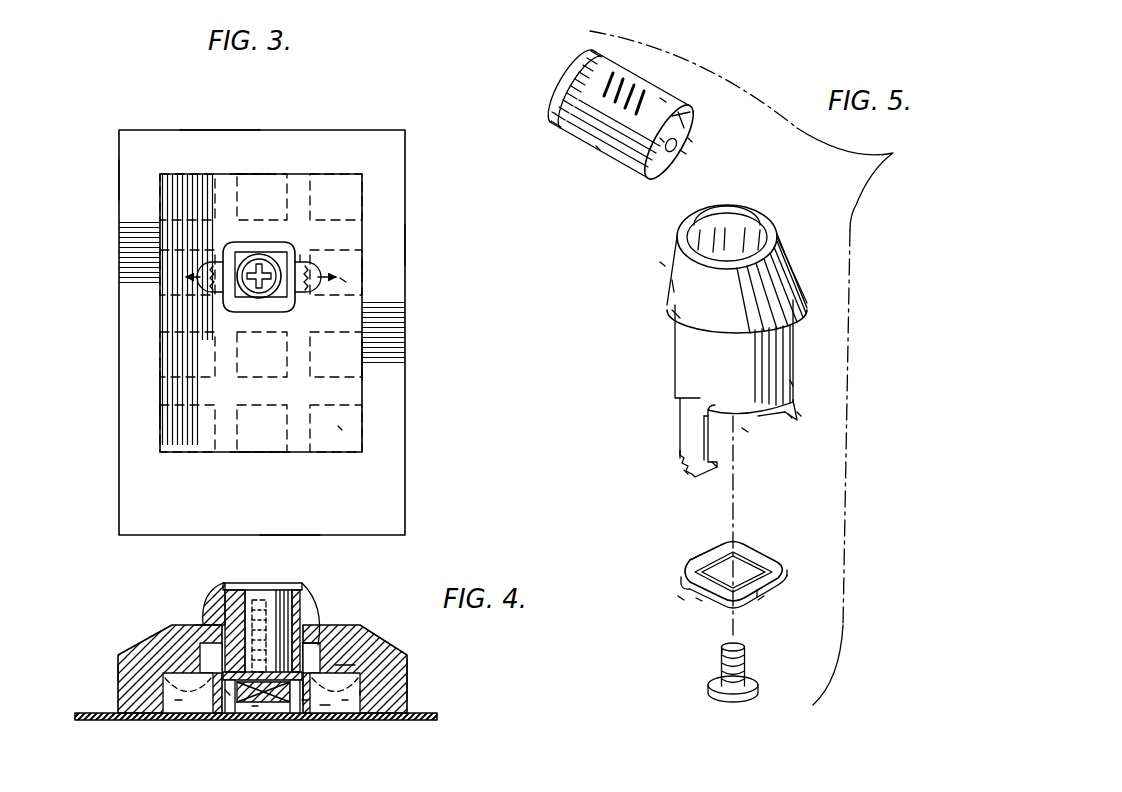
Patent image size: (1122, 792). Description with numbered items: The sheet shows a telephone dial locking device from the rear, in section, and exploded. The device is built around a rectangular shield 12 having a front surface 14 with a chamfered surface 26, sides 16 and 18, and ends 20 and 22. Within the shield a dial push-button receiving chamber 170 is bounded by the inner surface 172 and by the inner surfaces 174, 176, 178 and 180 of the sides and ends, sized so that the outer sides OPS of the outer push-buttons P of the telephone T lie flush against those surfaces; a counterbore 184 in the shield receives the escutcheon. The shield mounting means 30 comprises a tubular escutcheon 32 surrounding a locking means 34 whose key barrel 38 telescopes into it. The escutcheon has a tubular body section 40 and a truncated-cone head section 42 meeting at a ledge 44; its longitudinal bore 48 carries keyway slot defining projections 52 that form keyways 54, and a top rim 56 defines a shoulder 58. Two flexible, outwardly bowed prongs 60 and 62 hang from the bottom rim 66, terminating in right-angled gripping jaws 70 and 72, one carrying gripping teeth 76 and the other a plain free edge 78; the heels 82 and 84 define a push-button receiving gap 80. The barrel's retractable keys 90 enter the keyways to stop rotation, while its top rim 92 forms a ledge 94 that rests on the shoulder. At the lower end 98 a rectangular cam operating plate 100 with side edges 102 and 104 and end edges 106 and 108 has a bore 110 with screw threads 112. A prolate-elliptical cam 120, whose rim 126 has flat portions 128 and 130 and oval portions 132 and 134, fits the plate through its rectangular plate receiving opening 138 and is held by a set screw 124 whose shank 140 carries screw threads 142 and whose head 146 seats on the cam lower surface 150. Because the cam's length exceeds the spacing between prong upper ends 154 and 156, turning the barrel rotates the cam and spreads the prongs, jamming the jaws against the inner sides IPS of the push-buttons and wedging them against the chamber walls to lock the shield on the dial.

In FIG. 3, the shield 12 is at (322, 128).
In FIG. 4, the shield 12 is at (142, 636).
In FIG. 4, the front surface 14 is at (205, 620).
In FIG. 3, the side 16 is at (119, 177).
In FIG. 4, the side 16 is at (407, 664).
In FIG. 3, the side 18 is at (405, 243).
In FIG. 4, the side 18 is at (120, 672).
In FIG. 3, the end 20 is at (222, 130).
In FIG. 3, the end 22 is at (288, 535).
In FIG. 5, the end 22 is at (780, 0).
In FIG. 4, the chamfered surface 26 is at (157, 624).
In FIG. 5, the shield mounting means 30 is at (658, 262).
In FIG. 4, the tubular escutcheon 32 is at (319, 592).
In FIG. 5, the tubular escutcheon 32 is at (801, 247).
In FIG. 4, the locking means 34 is at (220, 582).
In FIG. 5, the locking means 34 is at (597, 151).
In FIG. 5, the key barrel 38 is at (652, 71).
In FIG. 5, the tubular body section 40 is at (675, 352).
In FIG. 5, the head section 42 is at (674, 285).
In FIG. 5, the ledge 44 is at (675, 315).
In FIG. 5, the longitudinally directed bore 48 is at (732, 220).
In FIG. 5, the keyway slot defining projections 52 is at (760, 232).
In FIG. 5, the keyways 54 is at (740, 226).
In FIG. 5, the top rim 56 is at (686, 222).
In FIG. 5, the shoulder 58 is at (704, 226).
In FIG. 4, the prong 60 is at (228, 693).
In FIG. 5, the prong 60 is at (678, 437).
In FIG. 4, the prong 62 is at (303, 683).
In FIG. 5, the prong 62 is at (799, 403).
In FIG. 5, the bottom rim 66 is at (728, 418).
In FIG. 5, the gripping jaw 70 is at (678, 458).
In FIG. 5, the gripping jaw 72 is at (790, 416).
In FIG. 4, the gripping teeth 76 is at (325, 705).
In FIG. 5, the gripping teeth 76 is at (684, 472).
In FIG. 4, the free edge 78 is at (217, 708).
In FIG. 5, the free edge 78 is at (801, 414).
In FIG. 5, the dial push-button receiving gap 80 is at (745, 430).
In FIG. 5, the prong heel 82 is at (717, 470).
In FIG. 5, the prong heel 84 is at (760, 420).
In FIG. 5, the retractable keys 90 is at (607, 110).
In FIG. 5, the top rim 92 is at (553, 85).
In FIG. 5, the ledge 94 is at (556, 113).
In FIG. 5, the lower end 98 is at (690, 126).
In FIG. 5, the cam operating plate 100 is at (686, 145).
In FIG. 5, the longitudinal side edge 102 is at (683, 120).
In FIG. 5, the longitudinal side edge 104 is at (662, 140).
In FIG. 5, the end edge 106 is at (663, 100).
In FIG. 5, the end edge 108 is at (683, 152).
In FIG. 5, the bore 110 is at (620, 143).
In FIG. 5, the screw threads 112 is at (690, 140).
In FIG. 5, the cam 120 is at (797, 559).
In FIG. 3, the set screw 124 is at (261, 277).
In FIG. 4, the set screw 124 is at (270, 703).
In FIG. 5, the set screw 124 is at (761, 686).
In FIG. 5, the circumferential rim 126 is at (779, 593).
In FIG. 5, the flat portion 128 is at (760, 600).
In FIG. 5, the flat portion 130 is at (695, 557).
In FIG. 5, the oval portion 132 is at (698, 600).
In FIG. 5, the oval portion 134 is at (790, 572).
In FIG. 5, the rectangular plate receiving opening 138 is at (740, 570).
In FIG. 4, the shank 140 is at (252, 645).
In FIG. 5, the shank 140 is at (746, 655).
In FIG. 5, the screw threads 142 is at (720, 655).
In FIG. 5, the head 146 is at (736, 703).
In FIG. 5, the cam lower surface 150 is at (678, 598).
In FIG. 5, the prong upper end 154 is at (690, 410).
In FIG. 5, the prong upper end 156 is at (794, 385).
In FIG. 3, the dial push-button receiving chamber 170 is at (338, 316).
In FIG. 4, the inner surface 172 is at (345, 668).
In FIG. 3, the inner surface 174 is at (358, 360).
In FIG. 3, the inner surface 176 is at (165, 392).
In FIG. 3, the inner surface 178 is at (260, 450).
In FIG. 3, the inner surface 180 is at (243, 178).
In FIG. 4, the counterbore 184 is at (312, 655).
In FIG. 3, the inner sides of push-buttons IPS is at (302, 262).
In FIG. 4, the inner sides of push-buttons IPS is at (305, 700).
In FIG. 3, the outer sides of push-buttons OPS is at (362, 270).
In FIG. 4, the outer sides of push-buttons OPS is at (360, 692).
In FIG. 3, the dial push-buttons P is at (345, 280).
In FIG. 4, the dial push-buttons P is at (180, 700).
In FIG. 4, the telephone T is at (97, 721).